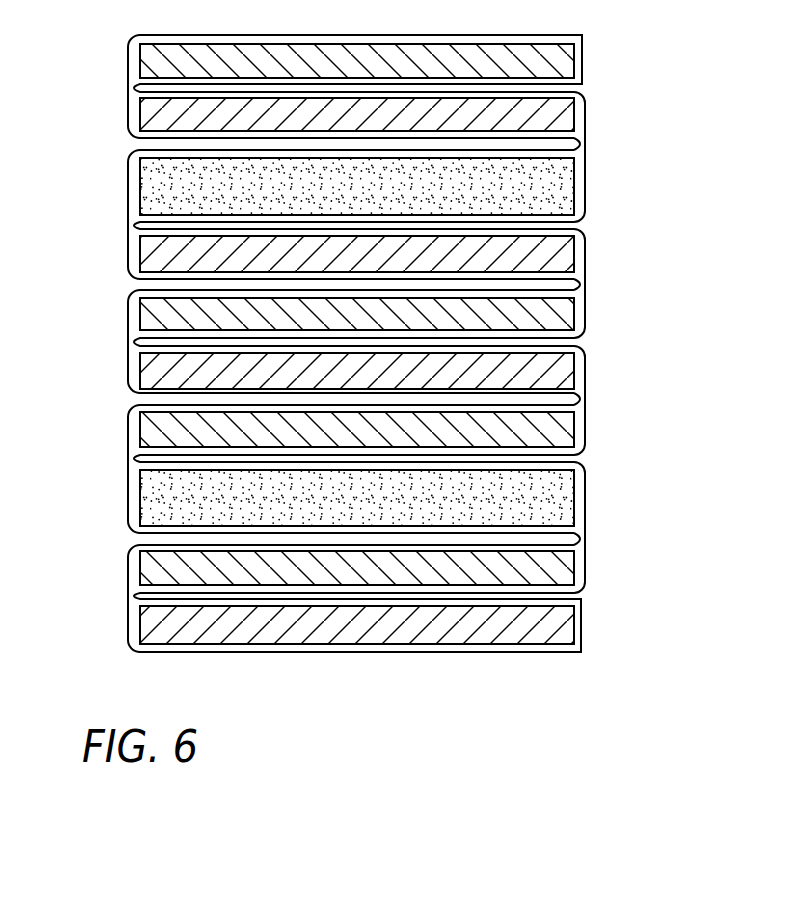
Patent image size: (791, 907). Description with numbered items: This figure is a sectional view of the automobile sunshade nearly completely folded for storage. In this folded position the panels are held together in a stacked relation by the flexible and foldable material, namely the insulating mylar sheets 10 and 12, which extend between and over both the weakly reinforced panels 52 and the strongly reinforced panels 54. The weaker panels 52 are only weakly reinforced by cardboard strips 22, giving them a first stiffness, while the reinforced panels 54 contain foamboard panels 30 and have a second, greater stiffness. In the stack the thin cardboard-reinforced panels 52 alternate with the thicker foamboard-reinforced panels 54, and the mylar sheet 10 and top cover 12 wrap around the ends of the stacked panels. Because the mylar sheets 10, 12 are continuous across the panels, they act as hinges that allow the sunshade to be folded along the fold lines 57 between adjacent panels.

The insulating mylar sheet 10 is at (488, 652).
The top cover 12 is at (560, 602).
The cardboard strip 22 is at (573, 118).
The foamboard panel 30 is at (575, 183).
The weaker panel 52 is at (140, 431).
The reinforced panel 54 is at (140, 497).
The fold line 57 is at (130, 226).